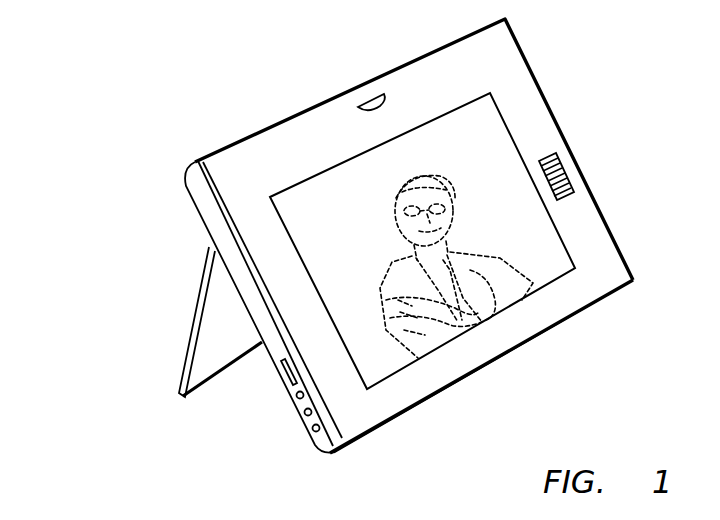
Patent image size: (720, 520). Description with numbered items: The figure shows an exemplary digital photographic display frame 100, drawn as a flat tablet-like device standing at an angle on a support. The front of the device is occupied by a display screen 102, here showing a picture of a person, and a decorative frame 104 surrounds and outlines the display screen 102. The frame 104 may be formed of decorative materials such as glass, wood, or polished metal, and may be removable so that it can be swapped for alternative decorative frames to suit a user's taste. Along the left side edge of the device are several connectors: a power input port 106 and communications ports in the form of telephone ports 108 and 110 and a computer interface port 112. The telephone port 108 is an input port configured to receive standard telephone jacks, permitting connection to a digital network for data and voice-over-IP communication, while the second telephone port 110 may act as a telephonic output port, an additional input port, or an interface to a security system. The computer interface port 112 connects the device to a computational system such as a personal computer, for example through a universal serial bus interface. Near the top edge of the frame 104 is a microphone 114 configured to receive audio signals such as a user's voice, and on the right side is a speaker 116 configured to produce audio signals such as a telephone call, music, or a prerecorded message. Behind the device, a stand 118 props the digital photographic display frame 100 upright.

The digital photographic display frame 100 is at (103, 78).
The display screen 102 is at (493, 143).
The frame 104 is at (510, 63).
The power input port 106 is at (308, 432).
The telephone port 108 is at (303, 413).
The telephone port 110 is at (295, 396).
The computer interface port 112 is at (281, 372).
The microphone 114 is at (375, 102).
The speaker 116 is at (566, 172).
The stand 118 is at (201, 297).